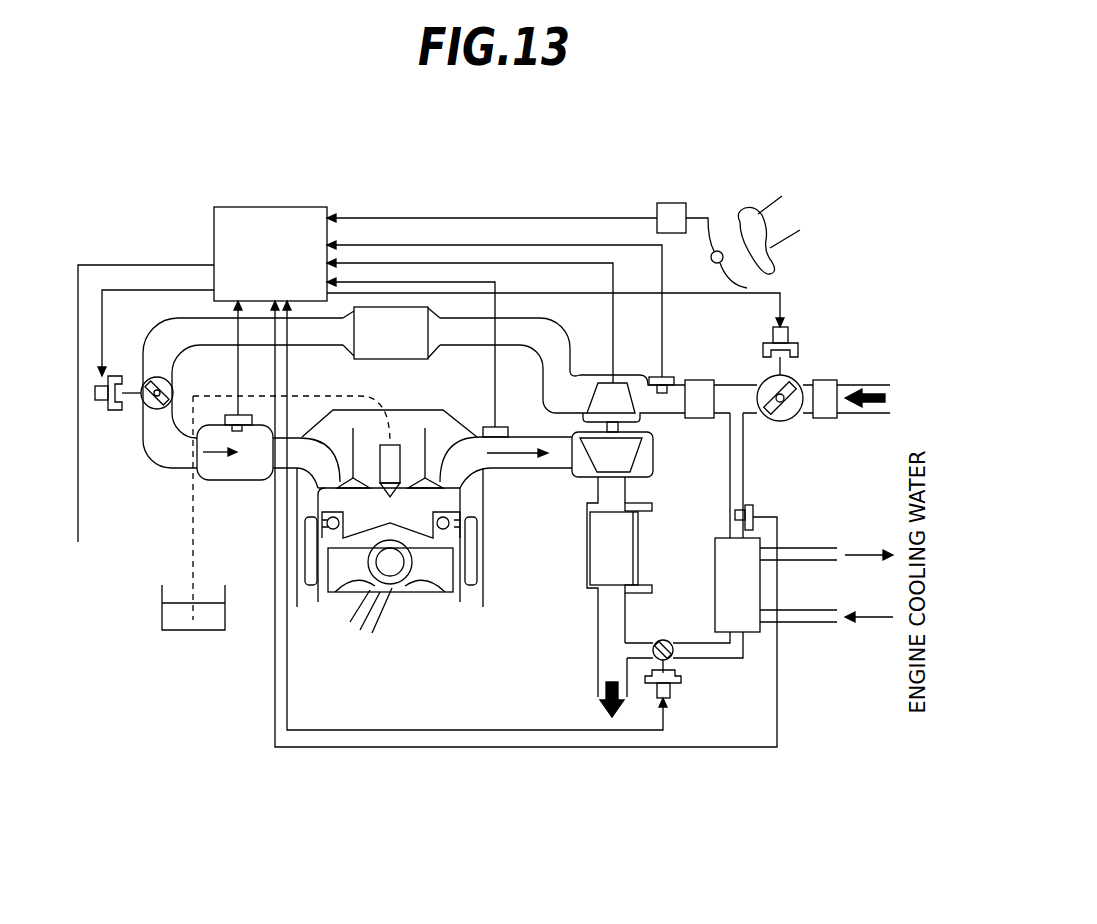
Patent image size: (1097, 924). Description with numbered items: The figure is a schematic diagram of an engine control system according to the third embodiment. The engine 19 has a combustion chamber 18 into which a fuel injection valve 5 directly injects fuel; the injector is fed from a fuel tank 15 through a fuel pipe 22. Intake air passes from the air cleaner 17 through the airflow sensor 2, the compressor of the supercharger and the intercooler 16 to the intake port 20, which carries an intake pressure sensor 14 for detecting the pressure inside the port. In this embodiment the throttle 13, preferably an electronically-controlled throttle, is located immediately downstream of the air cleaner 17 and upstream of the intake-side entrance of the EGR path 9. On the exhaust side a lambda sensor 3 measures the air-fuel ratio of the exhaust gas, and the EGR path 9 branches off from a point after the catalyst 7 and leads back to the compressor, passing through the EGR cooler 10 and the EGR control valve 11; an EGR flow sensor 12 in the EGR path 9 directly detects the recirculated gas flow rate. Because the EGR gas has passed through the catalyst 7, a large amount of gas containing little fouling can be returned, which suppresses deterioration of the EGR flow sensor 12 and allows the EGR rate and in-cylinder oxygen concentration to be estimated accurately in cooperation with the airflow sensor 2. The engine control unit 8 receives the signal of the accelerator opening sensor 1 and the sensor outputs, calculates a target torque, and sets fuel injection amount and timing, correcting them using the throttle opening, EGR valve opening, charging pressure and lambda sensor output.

The accelerator opening sensor 1 is at (670, 203).
The airflow sensor 2 is at (656, 377).
The lambda sensor 3 is at (499, 427).
The fuel injection valve 5 is at (403, 438).
The catalyst 7 is at (606, 564).
The engine control unit 8 is at (214, 232).
The EGR path 9 is at (731, 657).
The EGR cooler 10 is at (714, 563).
The EGR control valve 11 is at (670, 693).
The EGR flow sensor 12 is at (752, 500).
The throttle 13 is at (112, 405).
The intake pressure sensor 14 is at (230, 414).
The fuel tank 15 is at (161, 599).
The intercooler 16 is at (417, 353).
The air cleaner 17 is at (700, 380).
The combustion chamber 18 is at (443, 498).
The engine 19 is at (443, 542).
The intake port 20 is at (154, 436).
The fuel pipe 22 is at (191, 549).